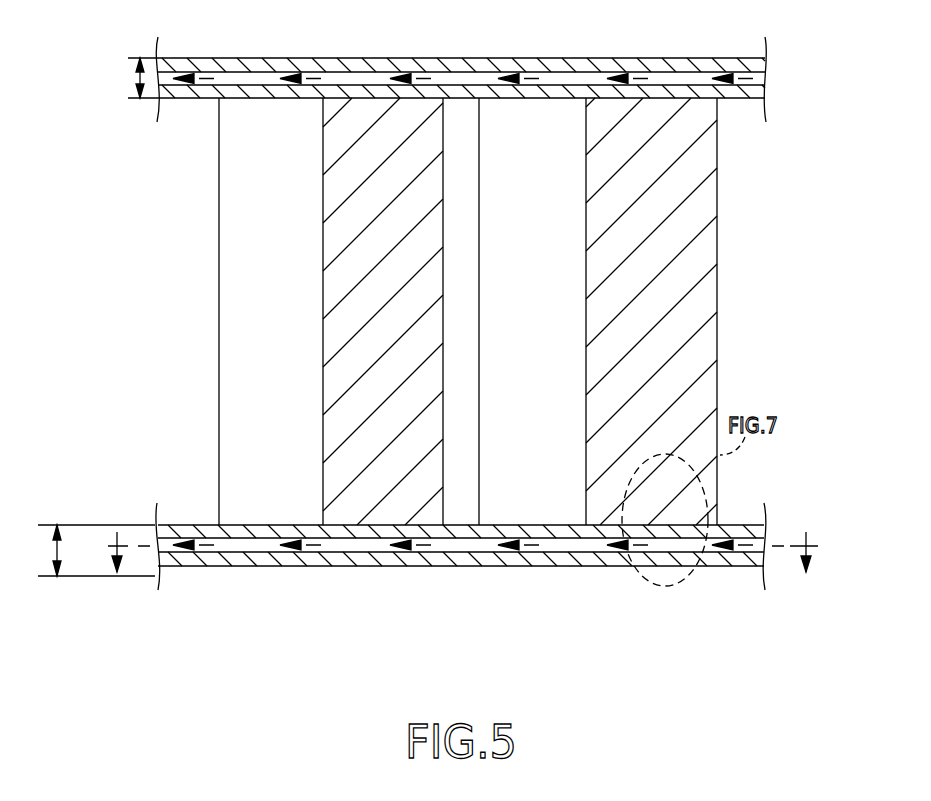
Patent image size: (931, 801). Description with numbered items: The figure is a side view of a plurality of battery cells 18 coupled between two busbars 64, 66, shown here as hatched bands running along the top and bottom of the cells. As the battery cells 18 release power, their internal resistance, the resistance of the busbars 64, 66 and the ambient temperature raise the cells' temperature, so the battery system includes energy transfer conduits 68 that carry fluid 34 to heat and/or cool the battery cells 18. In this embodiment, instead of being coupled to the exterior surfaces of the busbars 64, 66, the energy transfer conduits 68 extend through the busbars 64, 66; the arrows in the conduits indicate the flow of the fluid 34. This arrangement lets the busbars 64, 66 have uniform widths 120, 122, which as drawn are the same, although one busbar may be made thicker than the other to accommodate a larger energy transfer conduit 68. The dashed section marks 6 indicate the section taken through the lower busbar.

The battery cell 18 is at (505, 140).
The fluid 34 is at (422, 545).
The busbar 64 is at (527, 560).
The busbar 66 is at (738, 70).
The energy transfer conduit 68 is at (697, 78).
The width 120 is at (132, 82).
The width 122 is at (60, 538).
The section line 6- 6 is at (464, 552).